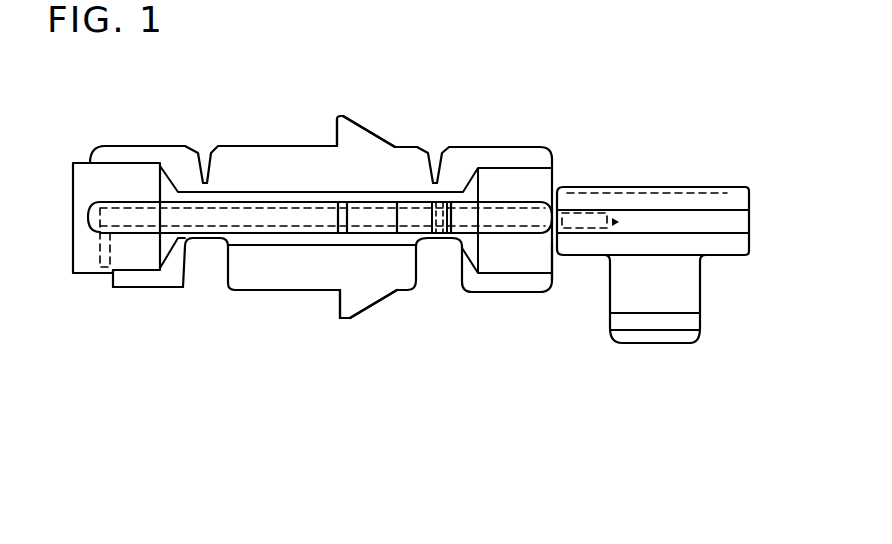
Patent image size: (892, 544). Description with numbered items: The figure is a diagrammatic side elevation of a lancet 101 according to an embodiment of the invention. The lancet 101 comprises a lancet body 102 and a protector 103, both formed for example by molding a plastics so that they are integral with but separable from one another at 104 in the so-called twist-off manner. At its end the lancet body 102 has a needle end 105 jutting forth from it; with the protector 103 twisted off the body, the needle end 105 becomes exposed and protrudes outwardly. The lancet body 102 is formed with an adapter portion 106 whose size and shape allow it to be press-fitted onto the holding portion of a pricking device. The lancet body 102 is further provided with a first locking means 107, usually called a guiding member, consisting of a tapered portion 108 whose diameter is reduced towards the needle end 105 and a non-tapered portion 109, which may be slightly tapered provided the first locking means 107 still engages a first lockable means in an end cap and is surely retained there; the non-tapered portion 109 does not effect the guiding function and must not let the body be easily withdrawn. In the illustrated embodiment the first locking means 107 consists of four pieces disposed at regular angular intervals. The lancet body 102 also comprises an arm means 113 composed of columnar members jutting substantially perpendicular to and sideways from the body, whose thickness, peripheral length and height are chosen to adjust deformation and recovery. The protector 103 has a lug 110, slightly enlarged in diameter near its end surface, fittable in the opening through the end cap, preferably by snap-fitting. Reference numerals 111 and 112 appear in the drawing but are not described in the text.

The lancet 101 is at (268, 318).
The lancet body 102 is at (297, 290).
The protector 103 is at (708, 188).
The separable junction 104 is at (560, 268).
The needle end 105 is at (605, 215).
The adapter portion 106 is at (140, 287).
The first locking means 107 is at (347, 313).
The tapered portion 108 is at (375, 310).
The non-tapered portion 109 is at (340, 114).
The lug 110 is at (681, 288).
The base flange 111 is at (620, 325).
The end cap 112 is at (83, 166).
The arm means 113 is at (433, 238).